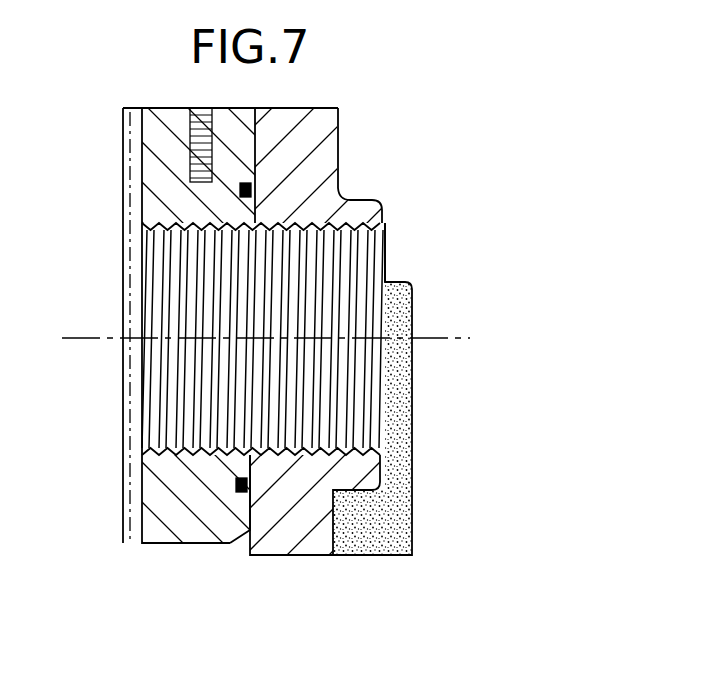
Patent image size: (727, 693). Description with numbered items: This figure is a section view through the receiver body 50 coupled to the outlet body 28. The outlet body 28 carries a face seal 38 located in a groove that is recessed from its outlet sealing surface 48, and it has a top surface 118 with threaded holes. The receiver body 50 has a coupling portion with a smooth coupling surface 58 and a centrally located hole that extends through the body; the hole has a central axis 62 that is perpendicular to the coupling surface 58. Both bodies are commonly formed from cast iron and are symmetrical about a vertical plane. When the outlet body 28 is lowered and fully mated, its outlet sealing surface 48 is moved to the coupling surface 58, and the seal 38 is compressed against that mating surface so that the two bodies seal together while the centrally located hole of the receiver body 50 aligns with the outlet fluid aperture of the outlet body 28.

The top surface 118 is at (168, 107).
The outlet body 28 is at (152, 556).
The coupling surface 58 is at (257, 110).
The face seal 38 is at (247, 497).
The outlet sealing surface 48 is at (252, 510).
The receiver body 50 is at (379, 566).
The central axis 62 is at (430, 337).